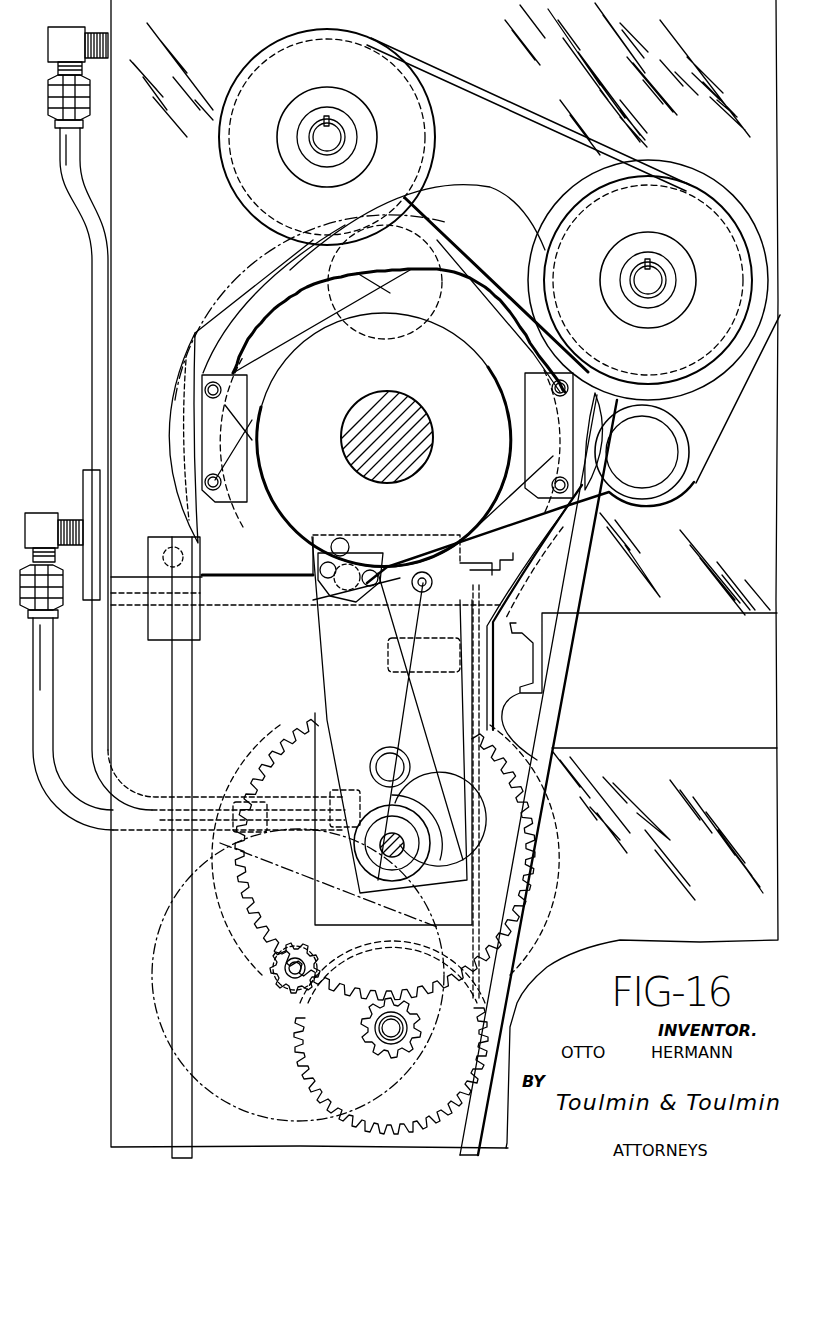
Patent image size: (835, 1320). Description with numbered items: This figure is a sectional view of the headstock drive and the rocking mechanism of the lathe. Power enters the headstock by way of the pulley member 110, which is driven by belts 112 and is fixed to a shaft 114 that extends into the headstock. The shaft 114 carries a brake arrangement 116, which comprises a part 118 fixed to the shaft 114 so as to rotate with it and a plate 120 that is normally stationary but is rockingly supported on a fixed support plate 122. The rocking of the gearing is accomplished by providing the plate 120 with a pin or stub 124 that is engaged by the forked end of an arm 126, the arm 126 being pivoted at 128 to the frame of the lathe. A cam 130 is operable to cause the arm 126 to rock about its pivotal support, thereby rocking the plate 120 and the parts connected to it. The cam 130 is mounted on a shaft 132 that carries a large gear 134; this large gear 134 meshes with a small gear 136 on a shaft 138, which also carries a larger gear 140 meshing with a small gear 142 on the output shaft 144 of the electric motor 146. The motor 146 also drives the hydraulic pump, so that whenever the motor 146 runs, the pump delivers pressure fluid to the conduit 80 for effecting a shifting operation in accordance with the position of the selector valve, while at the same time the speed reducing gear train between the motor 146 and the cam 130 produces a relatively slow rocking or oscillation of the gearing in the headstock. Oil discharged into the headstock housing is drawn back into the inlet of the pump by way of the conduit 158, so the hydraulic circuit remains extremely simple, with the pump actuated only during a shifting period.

The conduit 80 is at (100, 408).
The conduit 158 is at (90, 828).
The pulley member 110 is at (490, 262).
The belts 112 is at (552, 719).
The shaft 114 is at (358, 412).
The brake arrangement 116 is at (218, 305).
The part fixed to shaft 118 is at (495, 268).
The plate 120 is at (505, 488).
The fixed support plate 122 is at (412, 216).
The pin or stub 124 is at (370, 565).
The arm 126 is at (358, 694).
The pivot 128 is at (372, 767).
The cam 130 is at (408, 862).
The shaft 132 is at (397, 833).
The large gear 134 is at (540, 855).
The small gear 136 is at (414, 1042).
The shaft 138 is at (385, 1043).
The larger gear 140 is at (410, 1122).
The small gear 142 is at (288, 988).
The output shaft 144 is at (280, 968).
The electric motor 146 is at (150, 993).